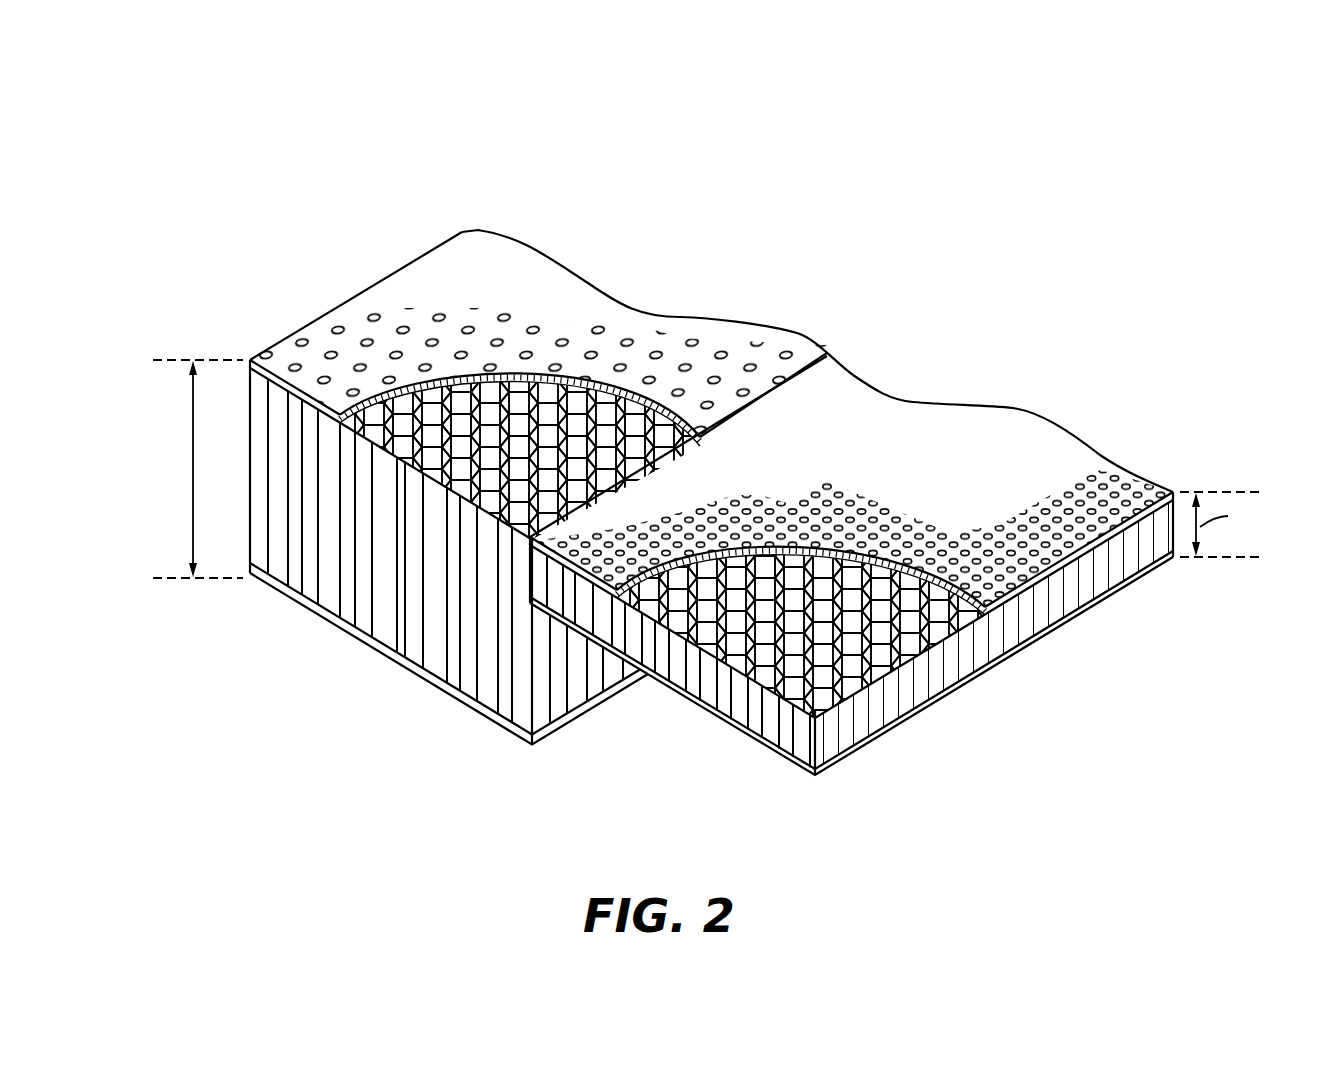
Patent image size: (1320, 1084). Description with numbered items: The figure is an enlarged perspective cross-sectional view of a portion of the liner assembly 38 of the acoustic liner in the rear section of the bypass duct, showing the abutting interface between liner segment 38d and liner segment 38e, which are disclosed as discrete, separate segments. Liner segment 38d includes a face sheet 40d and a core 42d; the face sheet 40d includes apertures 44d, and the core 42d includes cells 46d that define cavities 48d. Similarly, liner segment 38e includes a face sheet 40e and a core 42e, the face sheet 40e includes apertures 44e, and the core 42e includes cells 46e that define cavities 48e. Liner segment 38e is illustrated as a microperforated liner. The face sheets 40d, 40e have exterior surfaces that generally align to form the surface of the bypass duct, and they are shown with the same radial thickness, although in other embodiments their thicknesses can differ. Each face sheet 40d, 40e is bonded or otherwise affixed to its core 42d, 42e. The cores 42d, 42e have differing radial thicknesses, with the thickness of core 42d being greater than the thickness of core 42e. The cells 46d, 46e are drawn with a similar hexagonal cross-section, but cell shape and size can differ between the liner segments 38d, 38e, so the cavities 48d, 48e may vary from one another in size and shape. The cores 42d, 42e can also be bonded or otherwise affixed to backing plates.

The liner assembly 38 is at (848, 149).
The liner segment 38d is at (565, 208).
The liner segment 38e is at (1015, 378).
The face sheet 40d is at (560, 288).
The face sheet 40e is at (872, 425).
The core 42d is at (294, 600).
The core 42e is at (689, 712).
The apertures 44d is at (785, 355).
The apertures 44e is at (1115, 478).
The cells 46d is at (437, 600).
The cells 46e is at (855, 718).
The cavities 48d is at (455, 422).
The cavities 48e is at (940, 668).